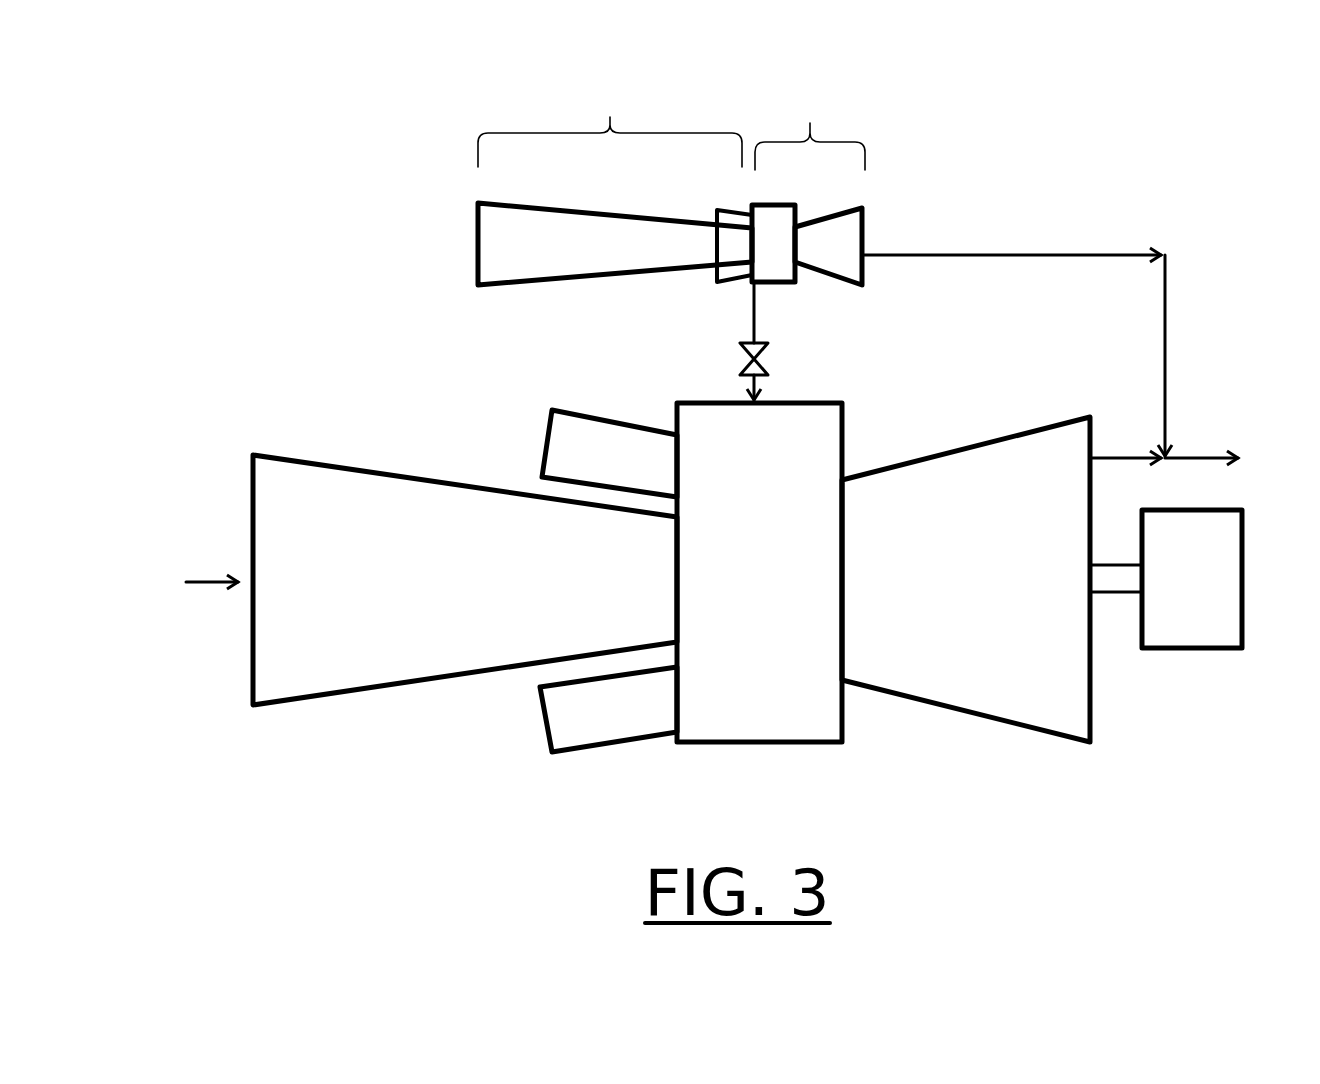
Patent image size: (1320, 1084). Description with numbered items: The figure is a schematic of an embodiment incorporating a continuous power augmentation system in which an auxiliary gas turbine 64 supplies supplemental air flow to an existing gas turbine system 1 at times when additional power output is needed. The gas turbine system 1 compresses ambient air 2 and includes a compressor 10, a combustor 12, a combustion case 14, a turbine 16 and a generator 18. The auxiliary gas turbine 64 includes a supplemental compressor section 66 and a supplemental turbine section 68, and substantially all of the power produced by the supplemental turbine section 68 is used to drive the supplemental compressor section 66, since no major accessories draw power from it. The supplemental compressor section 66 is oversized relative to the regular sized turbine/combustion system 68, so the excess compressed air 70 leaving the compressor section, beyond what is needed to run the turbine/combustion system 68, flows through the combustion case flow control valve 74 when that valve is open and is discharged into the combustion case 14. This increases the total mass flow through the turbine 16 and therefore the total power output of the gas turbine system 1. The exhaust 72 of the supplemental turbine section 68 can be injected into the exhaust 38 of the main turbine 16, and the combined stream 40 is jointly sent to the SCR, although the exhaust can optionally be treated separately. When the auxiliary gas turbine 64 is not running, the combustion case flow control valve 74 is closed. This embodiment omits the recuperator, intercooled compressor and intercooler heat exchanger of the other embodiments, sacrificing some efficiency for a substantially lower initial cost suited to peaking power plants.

The gas turbine system 1 is at (294, 353).
The ambient air 2 is at (201, 582).
The compressor 10 is at (384, 464).
The combustor 12 is at (620, 415).
The combustion case 14 is at (716, 394).
The turbine 16 is at (967, 441).
The generator 18 is at (1198, 657).
The exhaust 38 is at (1128, 446).
The combined exhaust gas flow 40 is at (1209, 446).
The auxiliary gas turbine 64 is at (482, 297).
The supplemental compressor section 66 is at (610, 123).
The supplemental turbine section 68 is at (808, 184).
The excess compressed air 70 is at (746, 315).
The exhaust 72 is at (986, 247).
The combustion case flow control valve 74 is at (777, 350).